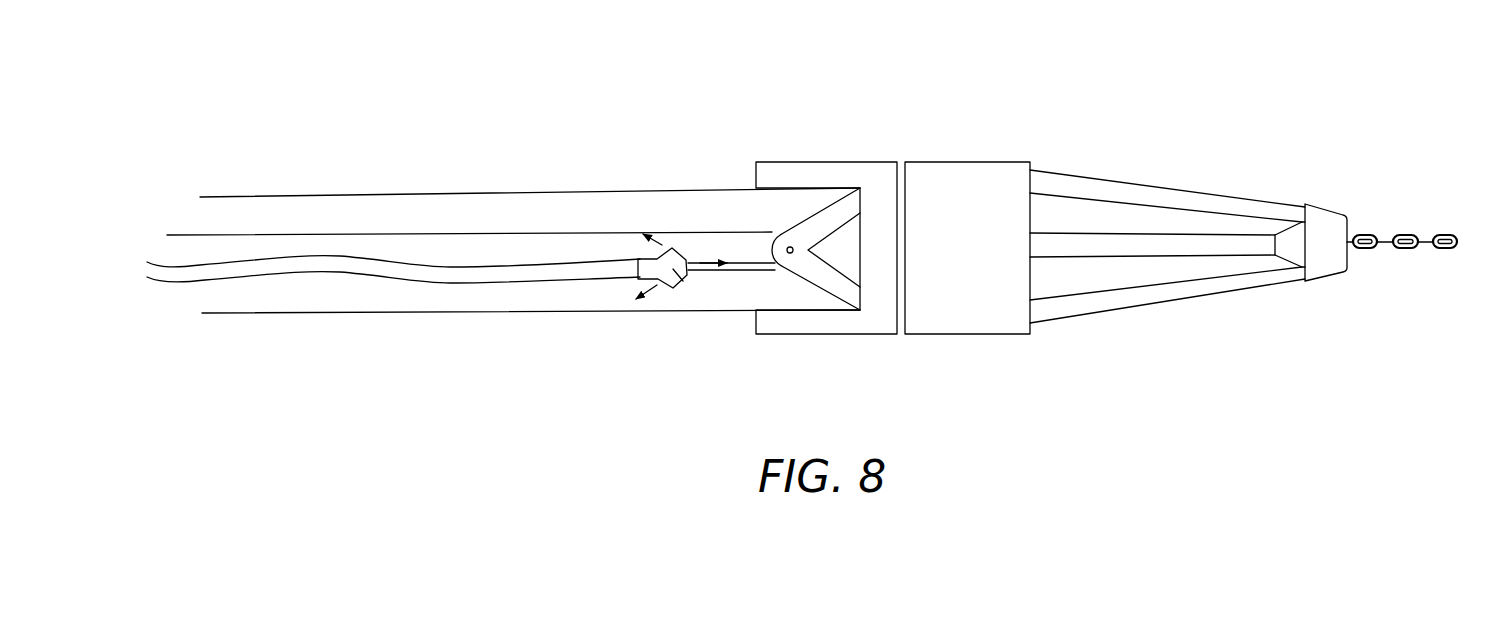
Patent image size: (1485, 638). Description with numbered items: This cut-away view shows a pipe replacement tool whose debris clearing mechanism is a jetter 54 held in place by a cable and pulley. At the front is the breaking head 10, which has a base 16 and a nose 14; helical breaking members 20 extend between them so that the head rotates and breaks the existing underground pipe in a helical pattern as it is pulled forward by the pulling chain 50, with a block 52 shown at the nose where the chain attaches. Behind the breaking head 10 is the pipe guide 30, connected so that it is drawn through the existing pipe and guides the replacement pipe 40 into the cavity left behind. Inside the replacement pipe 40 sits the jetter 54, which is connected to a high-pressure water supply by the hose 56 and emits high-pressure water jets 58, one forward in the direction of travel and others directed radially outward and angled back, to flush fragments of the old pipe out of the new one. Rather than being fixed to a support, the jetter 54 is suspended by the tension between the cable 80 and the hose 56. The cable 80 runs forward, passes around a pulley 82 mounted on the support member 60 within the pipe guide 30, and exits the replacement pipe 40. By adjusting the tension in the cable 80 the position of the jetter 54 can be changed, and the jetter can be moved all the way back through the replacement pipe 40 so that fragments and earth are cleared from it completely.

The breaking head 10 is at (1030, 170).
The nose 14 is at (1330, 283).
The base 16 is at (975, 335).
The helical breaking members 20 is at (1162, 283).
The pipe guide 30 is at (860, 162).
The replacement pipe 40 is at (484, 196).
The pulling chain 50 is at (1405, 235).
The block 52 is at (1290, 235).
The jetter 54 is at (680, 288).
The hose 56 is at (500, 283).
The high-pressure water jets 58 is at (663, 240).
The support member 60 is at (832, 283).
The cable 80 is at (338, 235).
The pulley 82 is at (772, 240).